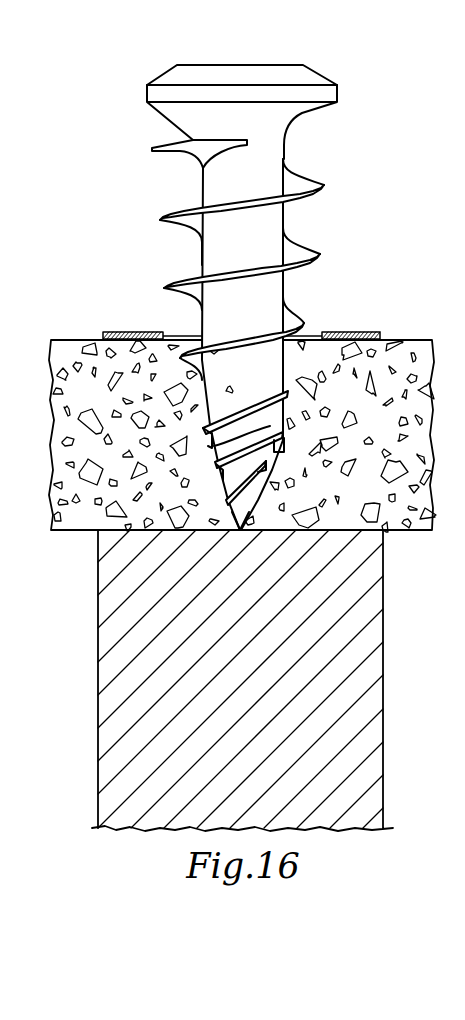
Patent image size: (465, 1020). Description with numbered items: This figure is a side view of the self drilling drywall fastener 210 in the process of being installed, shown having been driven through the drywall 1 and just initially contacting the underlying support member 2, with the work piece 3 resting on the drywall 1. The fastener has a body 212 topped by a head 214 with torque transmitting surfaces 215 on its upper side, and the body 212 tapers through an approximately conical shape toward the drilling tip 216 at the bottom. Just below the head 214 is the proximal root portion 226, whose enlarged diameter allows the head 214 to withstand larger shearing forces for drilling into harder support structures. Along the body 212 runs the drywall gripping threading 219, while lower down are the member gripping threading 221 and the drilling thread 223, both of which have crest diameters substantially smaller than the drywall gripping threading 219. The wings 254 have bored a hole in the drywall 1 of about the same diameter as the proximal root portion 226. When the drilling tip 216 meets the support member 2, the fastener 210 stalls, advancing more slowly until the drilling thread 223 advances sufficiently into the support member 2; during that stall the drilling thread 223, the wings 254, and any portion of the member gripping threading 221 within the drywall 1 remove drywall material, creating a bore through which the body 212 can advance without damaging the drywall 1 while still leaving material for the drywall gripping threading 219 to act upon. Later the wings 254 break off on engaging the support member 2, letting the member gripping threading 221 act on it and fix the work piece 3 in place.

The drywall 1 is at (409, 332).
The support member 2 is at (389, 692).
The work piece 3 is at (131, 327).
The drywall fastener 210 is at (238, 325).
The body 212 is at (277, 288).
The head 214 is at (157, 83).
The torque transmitting surfaces 215 is at (238, 65).
The drilling tip 216 is at (240, 528).
The drywall gripping threading 219 is at (176, 212).
The member gripping threading 221 is at (284, 356).
The drilling thread 223 is at (266, 463).
The proximal root portion 226 is at (201, 253).
The wings 254 is at (284, 448).